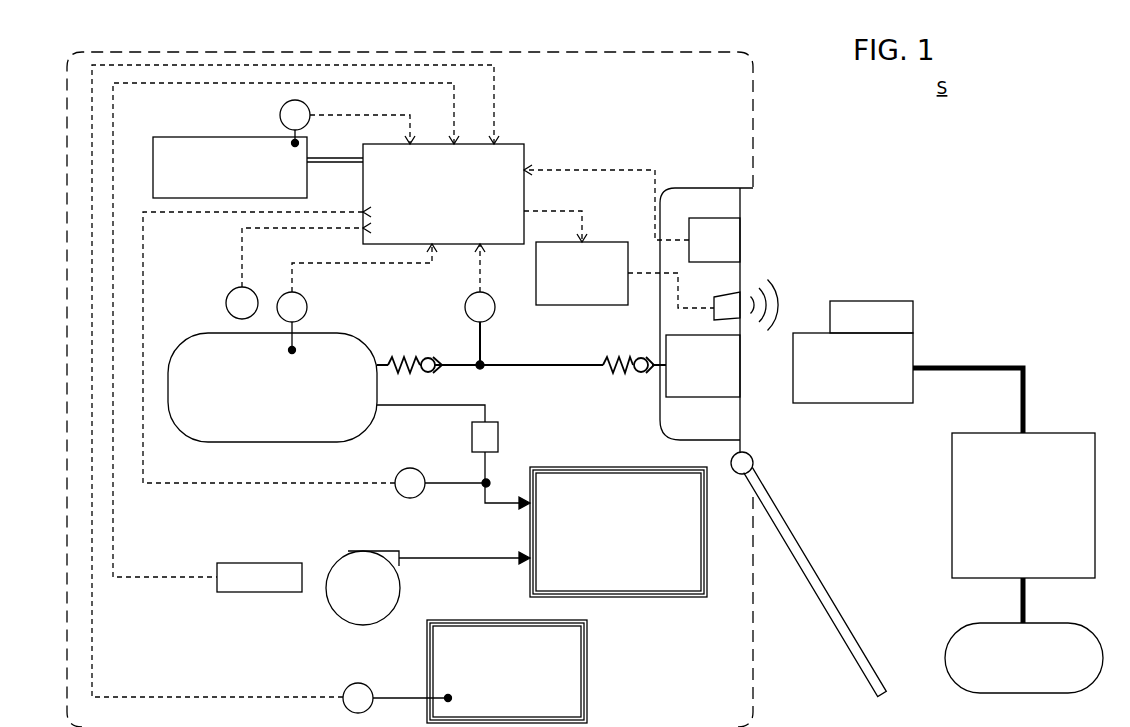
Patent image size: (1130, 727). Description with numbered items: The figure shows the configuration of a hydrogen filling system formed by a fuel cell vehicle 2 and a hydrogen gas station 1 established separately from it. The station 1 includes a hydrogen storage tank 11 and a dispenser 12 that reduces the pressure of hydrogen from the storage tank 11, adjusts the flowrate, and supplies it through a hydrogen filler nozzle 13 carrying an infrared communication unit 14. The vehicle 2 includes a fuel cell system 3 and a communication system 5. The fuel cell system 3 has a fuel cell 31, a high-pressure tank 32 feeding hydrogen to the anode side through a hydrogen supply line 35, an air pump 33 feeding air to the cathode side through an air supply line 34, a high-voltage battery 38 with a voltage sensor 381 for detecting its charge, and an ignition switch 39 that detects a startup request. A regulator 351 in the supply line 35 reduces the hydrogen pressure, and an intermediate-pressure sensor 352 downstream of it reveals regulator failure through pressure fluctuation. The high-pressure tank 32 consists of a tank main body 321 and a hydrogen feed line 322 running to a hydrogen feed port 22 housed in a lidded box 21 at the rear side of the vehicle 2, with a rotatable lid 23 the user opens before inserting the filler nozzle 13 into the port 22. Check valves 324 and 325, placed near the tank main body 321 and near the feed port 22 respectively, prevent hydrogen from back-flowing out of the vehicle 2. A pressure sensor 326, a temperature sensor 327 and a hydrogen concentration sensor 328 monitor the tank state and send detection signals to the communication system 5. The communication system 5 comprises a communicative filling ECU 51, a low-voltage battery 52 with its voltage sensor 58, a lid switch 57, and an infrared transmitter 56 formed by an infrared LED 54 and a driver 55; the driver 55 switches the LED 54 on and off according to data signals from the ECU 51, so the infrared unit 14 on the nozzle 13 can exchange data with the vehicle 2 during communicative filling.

The hydrogen gas station 1 is at (1052, 293).
The vehicle 2 is at (753, 105).
The fuel cell system 3 is at (632, 648).
The communication system 5 is at (623, 130).
The hydrogen storage tank 11 is at (976, 623).
The dispenser 12 is at (990, 433).
The hydrogen filler nozzle 13 is at (876, 403).
The infrared communication unit 14 is at (895, 301).
The lidded box 21 is at (710, 188).
The hydrogen feed port 22 is at (702, 397).
The lid 23 is at (800, 556).
The fuel cell 31 is at (586, 467).
The high-pressure tank 32 is at (205, 313).
The tank main body 321 is at (196, 336).
The hydrogen feed line 322 is at (543, 365).
The check valve 324 is at (410, 357).
The check valve 325 is at (618, 372).
The pressure sensor 326 is at (467, 302).
The temperature sensor 327 is at (284, 294).
The hydrogen concentration sensor 328 is at (233, 290).
The air pump 33 is at (367, 551).
The air supply line 34 is at (435, 558).
The hydrogen supply line 35 is at (466, 405).
The regulator 351 is at (497, 424).
The intermediate-pressure sensor 352 is at (401, 470).
The high-voltage battery 38 is at (482, 620).
The voltage sensor for the high-voltage battery 381 is at (352, 683).
The ignition switch 39 is at (216, 564).
The communicative filling ECU 51 is at (506, 144).
The low-voltage battery 52 is at (212, 137).
The infrared LED 54 is at (714, 300).
The driver 55 is at (603, 242).
The infrared transmitter 56 is at (611, 325).
The lid switch 57 is at (742, 232).
The voltage sensor for the low-voltage battery 58 is at (280, 112).